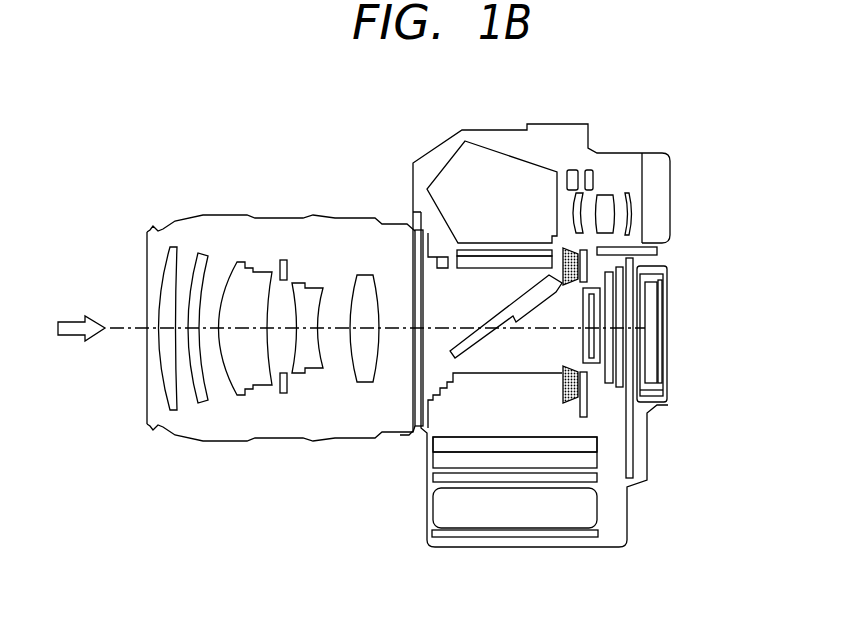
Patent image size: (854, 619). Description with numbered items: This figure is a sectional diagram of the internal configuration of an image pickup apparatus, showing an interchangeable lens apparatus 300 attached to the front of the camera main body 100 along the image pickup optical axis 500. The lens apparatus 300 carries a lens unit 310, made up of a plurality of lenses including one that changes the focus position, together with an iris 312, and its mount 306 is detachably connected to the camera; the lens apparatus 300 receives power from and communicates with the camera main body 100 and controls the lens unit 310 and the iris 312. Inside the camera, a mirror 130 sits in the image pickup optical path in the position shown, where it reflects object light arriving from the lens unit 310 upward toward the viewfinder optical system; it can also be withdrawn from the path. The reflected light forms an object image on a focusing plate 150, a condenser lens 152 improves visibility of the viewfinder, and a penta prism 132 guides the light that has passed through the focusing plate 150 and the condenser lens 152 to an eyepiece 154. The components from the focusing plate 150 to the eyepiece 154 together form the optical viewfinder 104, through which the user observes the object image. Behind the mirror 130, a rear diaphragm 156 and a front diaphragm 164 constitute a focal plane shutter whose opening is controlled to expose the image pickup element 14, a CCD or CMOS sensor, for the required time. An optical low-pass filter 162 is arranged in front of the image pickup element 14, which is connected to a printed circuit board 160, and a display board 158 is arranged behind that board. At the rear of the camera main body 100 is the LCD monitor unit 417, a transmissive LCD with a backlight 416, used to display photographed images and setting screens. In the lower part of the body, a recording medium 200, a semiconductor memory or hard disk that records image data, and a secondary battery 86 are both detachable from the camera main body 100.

The camera main body 100 is at (583, 147).
The optical viewfinder 104 is at (662, 202).
The mirror 130 is at (465, 345).
The penta prism 132 is at (510, 153).
The focusing plate 150 is at (502, 252).
The condenser lens 152 is at (472, 262).
The eyepiece 154 is at (635, 197).
The rear diaphragm 156 is at (605, 255).
The image pickup element 14 is at (587, 264).
The display board 158 is at (594, 300).
The printed circuit board 160 is at (612, 352).
The optical low-pass filter 162 is at (585, 353).
The front diaphragm 164 is at (585, 397).
The recording medium 200 is at (585, 443).
The secondary battery 86 is at (582, 509).
The lens apparatus 300 is at (277, 232).
The lens unit 310 is at (170, 402).
The iris 312 is at (285, 397).
The mount 306 is at (418, 400).
The axis 500 is at (275, 345).
The backlight 416 is at (649, 322).
The LCD monitor unit 417 is at (662, 347).